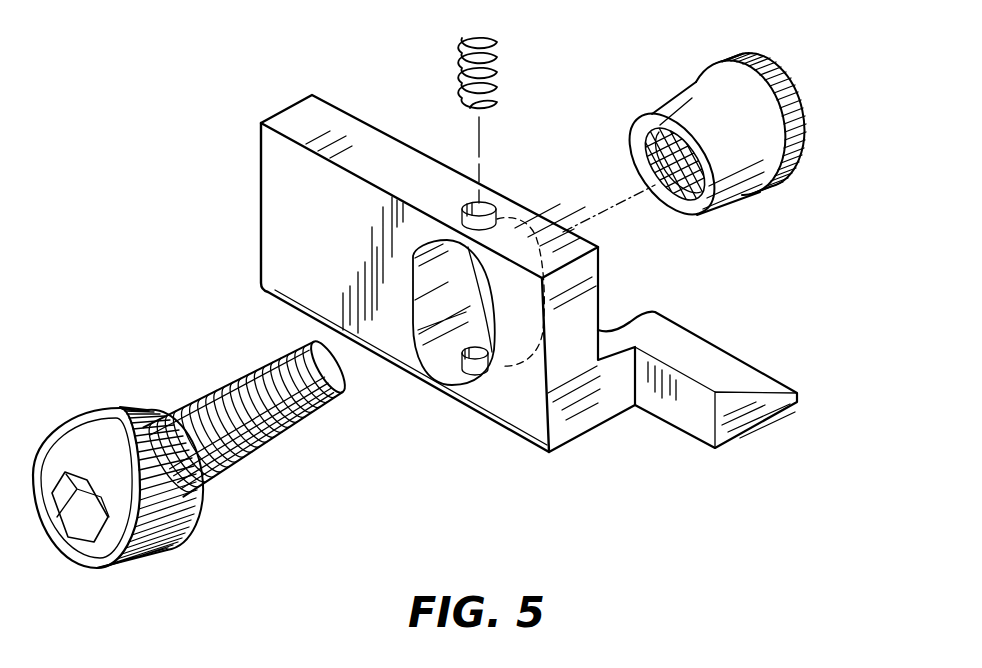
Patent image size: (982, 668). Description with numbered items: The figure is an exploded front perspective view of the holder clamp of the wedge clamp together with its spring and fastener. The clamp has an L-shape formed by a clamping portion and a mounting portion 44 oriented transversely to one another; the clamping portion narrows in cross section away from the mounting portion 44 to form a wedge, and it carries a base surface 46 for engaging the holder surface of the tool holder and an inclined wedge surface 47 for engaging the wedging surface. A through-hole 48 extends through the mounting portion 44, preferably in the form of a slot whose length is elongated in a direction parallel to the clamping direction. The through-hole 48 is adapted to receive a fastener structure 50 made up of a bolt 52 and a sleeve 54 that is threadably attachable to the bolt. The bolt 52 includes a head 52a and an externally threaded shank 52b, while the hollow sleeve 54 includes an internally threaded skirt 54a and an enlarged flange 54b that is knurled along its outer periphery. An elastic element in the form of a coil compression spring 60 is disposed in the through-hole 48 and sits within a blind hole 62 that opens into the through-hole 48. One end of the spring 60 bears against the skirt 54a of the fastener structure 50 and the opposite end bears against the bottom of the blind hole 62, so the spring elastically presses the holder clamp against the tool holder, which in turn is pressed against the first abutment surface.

The mounting portion 44 is at (505, 210).
The base surface 46 is at (587, 407).
The inclined wedge surface 47 is at (717, 362).
The through-hole 48 is at (418, 332).
The fastener structure 50 is at (225, 352).
The bolt 52 is at (176, 388).
The head 52a is at (163, 543).
The externally threaded shank 52b is at (282, 440).
The sleeve 54 is at (664, 92).
The internally threaded skirt 54a is at (735, 200).
The enlarged flange 54b is at (785, 180).
The coil compression spring 60 is at (462, 50).
The blind hole 62 is at (460, 372).